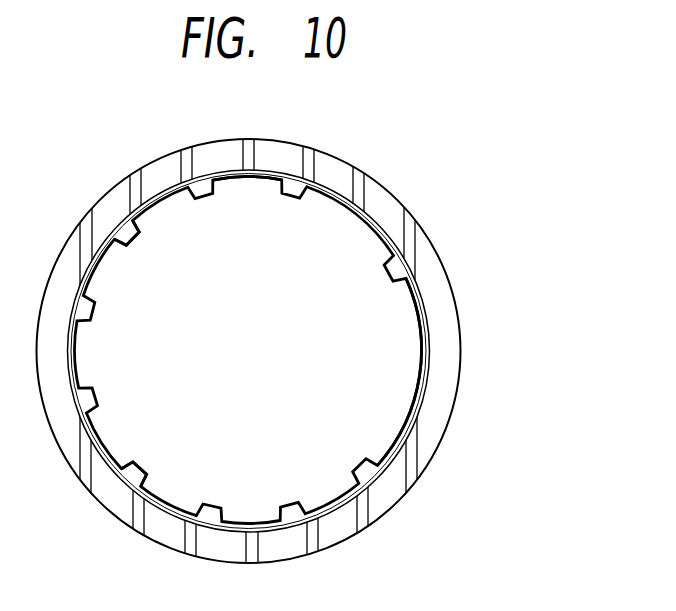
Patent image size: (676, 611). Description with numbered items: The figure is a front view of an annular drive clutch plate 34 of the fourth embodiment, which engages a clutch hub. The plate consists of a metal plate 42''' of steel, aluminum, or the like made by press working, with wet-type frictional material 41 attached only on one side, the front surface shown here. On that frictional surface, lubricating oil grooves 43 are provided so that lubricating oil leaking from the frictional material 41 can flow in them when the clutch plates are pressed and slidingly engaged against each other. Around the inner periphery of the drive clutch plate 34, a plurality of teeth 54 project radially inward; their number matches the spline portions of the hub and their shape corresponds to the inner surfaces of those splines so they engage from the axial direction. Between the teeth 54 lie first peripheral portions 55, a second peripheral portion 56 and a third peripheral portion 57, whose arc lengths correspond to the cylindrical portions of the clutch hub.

The drive clutch plate 34 is at (372, 157).
The wet-type frictional material 41 is at (385, 213).
The metal plate 42''' is at (294, 351).
The lubricating oil grooves 43 is at (147, 178).
The teeth 54 is at (135, 227).
The first peripheral portions 55 is at (240, 178).
The second peripheral portion 56 is at (362, 217).
The third peripheral portion 57 is at (413, 413).